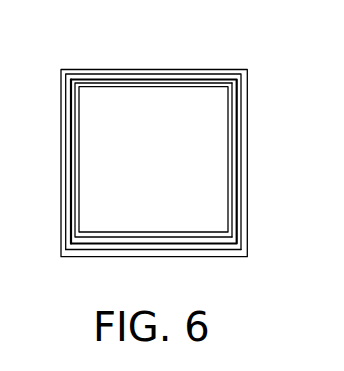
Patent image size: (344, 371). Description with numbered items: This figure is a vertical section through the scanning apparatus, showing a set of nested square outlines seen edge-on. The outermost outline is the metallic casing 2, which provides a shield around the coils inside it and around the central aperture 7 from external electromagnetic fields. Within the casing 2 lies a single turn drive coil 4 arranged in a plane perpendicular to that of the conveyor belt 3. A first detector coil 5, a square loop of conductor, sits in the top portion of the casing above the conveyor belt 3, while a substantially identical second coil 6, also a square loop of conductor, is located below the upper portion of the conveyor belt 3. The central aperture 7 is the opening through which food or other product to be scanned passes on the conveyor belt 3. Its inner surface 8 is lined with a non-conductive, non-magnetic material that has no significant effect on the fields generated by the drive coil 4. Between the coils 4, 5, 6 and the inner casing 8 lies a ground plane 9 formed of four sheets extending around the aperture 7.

The casing 2 is at (232, 69).
The conveyor belt 3 is at (150, 232).
The single turn drive coil 4 is at (80, 76).
The first detector coil 5 is at (150, 80).
The second coil 6 is at (150, 250).
The central aperture 7 is at (93, 161).
The inner surface of the aperture 8 is at (150, 88).
The ground plane 9 is at (228, 162).